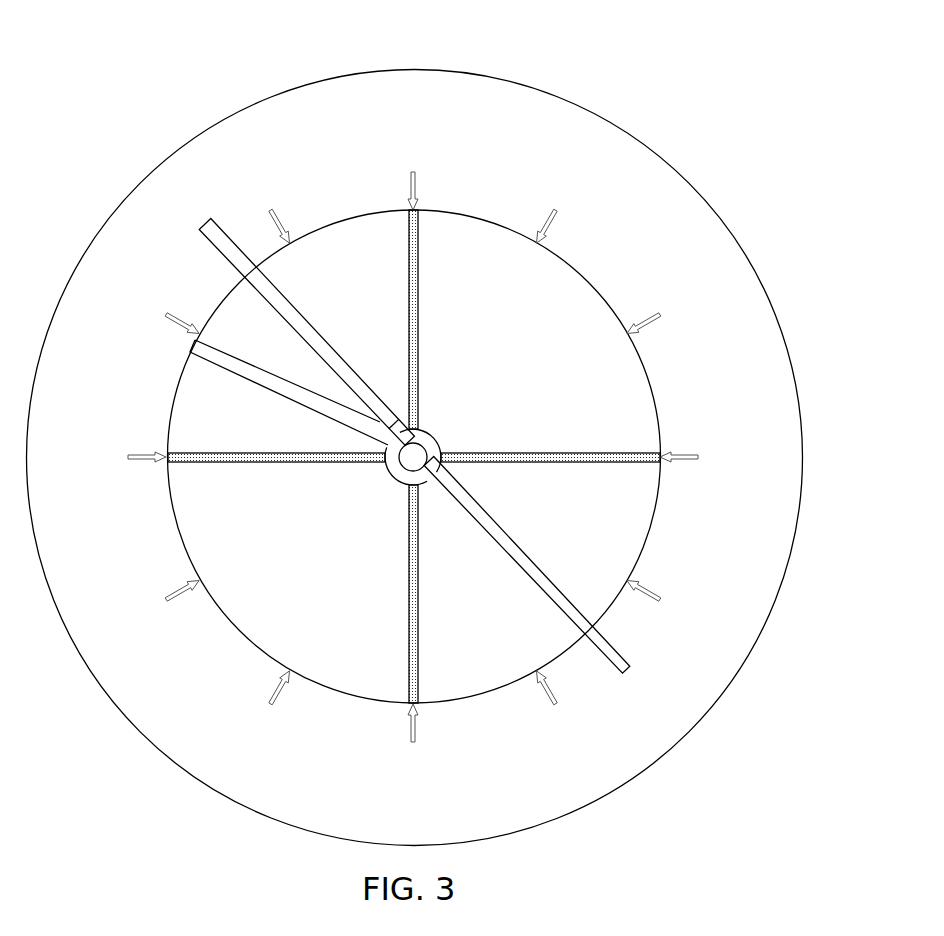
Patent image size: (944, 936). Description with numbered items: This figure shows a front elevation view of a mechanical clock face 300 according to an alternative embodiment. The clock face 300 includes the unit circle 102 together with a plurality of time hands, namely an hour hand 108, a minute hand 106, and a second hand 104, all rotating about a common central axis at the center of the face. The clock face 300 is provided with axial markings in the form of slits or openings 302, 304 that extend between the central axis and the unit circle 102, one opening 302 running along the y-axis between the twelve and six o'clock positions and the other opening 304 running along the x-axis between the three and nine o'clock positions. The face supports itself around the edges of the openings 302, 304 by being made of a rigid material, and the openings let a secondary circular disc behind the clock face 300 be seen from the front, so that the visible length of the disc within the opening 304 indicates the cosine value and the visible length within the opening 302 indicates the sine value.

The mechanical clock face 300 is at (172, 68).
The unit circle 102 is at (610, 263).
The second hand 104 is at (513, 556).
The minute hand 106 is at (320, 343).
The hour hand 108 is at (288, 402).
The opening 302 is at (418, 320).
The opening 304 is at (555, 452).